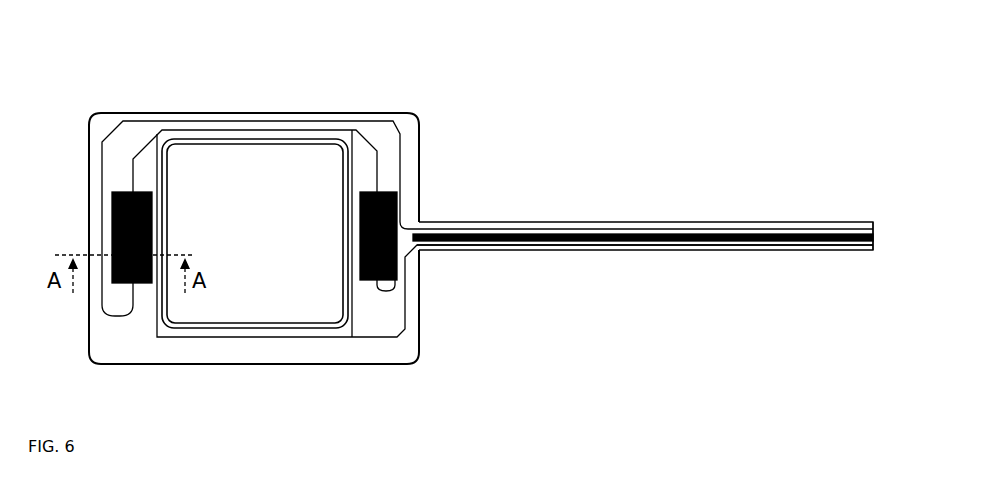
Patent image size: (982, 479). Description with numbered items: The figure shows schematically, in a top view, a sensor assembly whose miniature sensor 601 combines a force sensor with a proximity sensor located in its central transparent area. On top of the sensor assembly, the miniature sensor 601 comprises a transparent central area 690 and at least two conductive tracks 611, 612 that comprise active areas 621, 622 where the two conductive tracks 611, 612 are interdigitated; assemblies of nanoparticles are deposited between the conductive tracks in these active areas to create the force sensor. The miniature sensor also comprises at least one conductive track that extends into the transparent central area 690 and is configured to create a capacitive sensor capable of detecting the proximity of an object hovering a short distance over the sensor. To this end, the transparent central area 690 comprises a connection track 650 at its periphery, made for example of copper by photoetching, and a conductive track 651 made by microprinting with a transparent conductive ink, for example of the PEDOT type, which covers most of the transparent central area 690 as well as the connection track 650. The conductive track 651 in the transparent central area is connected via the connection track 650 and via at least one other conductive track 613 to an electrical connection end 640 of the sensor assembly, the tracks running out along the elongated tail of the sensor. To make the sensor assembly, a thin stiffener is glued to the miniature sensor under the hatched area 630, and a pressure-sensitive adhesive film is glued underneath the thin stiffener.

The miniature sensor 601 is at (117, 79).
The connection track 650 is at (303, 127).
The conductive track 651 is at (208, 192).
The active area 621 is at (108, 230).
The active area 622 is at (409, 231).
The transparent central area 690 is at (255, 233).
The hatched area 630 is at (133, 333).
The conductive track 611 is at (488, 232).
The conductive track 612 is at (538, 245).
The conductive track 613 is at (665, 246).
The electrical connection end 640 is at (850, 222).